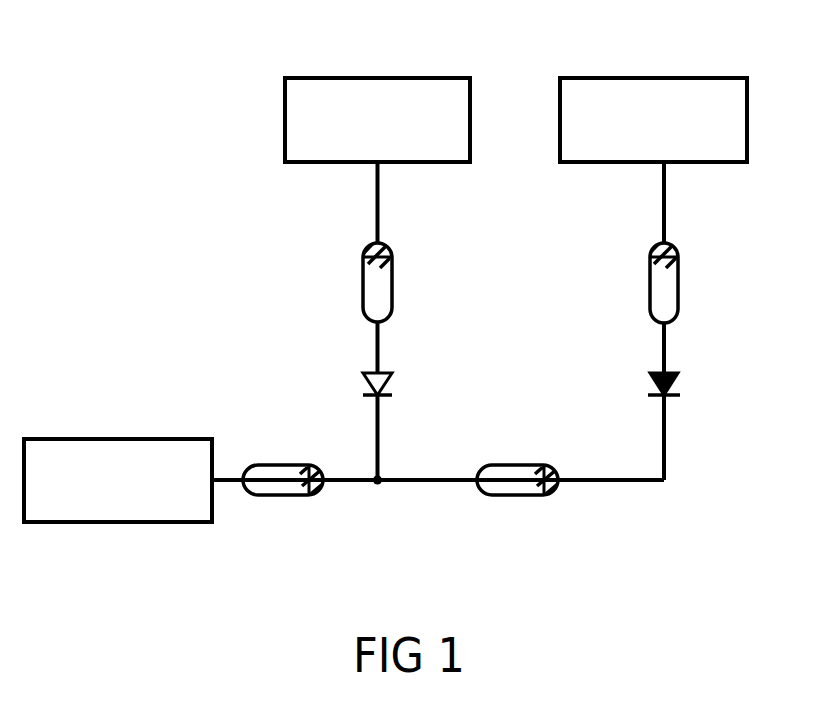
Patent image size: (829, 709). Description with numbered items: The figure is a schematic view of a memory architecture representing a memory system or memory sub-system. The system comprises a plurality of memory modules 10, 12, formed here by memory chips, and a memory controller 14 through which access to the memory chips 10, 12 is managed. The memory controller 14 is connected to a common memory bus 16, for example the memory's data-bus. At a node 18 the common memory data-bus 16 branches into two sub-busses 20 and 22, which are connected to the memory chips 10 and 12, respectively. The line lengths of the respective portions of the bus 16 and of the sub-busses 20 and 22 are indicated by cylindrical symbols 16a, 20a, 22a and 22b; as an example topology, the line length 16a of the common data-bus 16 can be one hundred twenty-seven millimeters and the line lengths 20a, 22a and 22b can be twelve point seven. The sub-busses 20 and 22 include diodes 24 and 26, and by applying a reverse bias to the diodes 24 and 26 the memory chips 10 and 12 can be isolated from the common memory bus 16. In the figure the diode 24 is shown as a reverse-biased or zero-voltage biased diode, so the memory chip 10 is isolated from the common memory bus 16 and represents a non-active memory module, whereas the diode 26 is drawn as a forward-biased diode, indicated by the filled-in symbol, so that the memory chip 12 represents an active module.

The memory module 10 is at (357, 77).
The memory module 12 is at (635, 77).
The memory controller 14 is at (88, 437).
The common memory bus 16 is at (345, 482).
The line length of the common data-bus 16a is at (266, 465).
The node 18 is at (380, 483).
The sub-bus 20 is at (377, 344).
The line length of sub-bus 20a is at (392, 290).
The sub-bus 22 is at (666, 460).
The line length of sub-bus 22a is at (680, 297).
The line length of sub-bus 22b is at (517, 463).
The diode 24 is at (392, 386).
The diode 26 is at (680, 388).